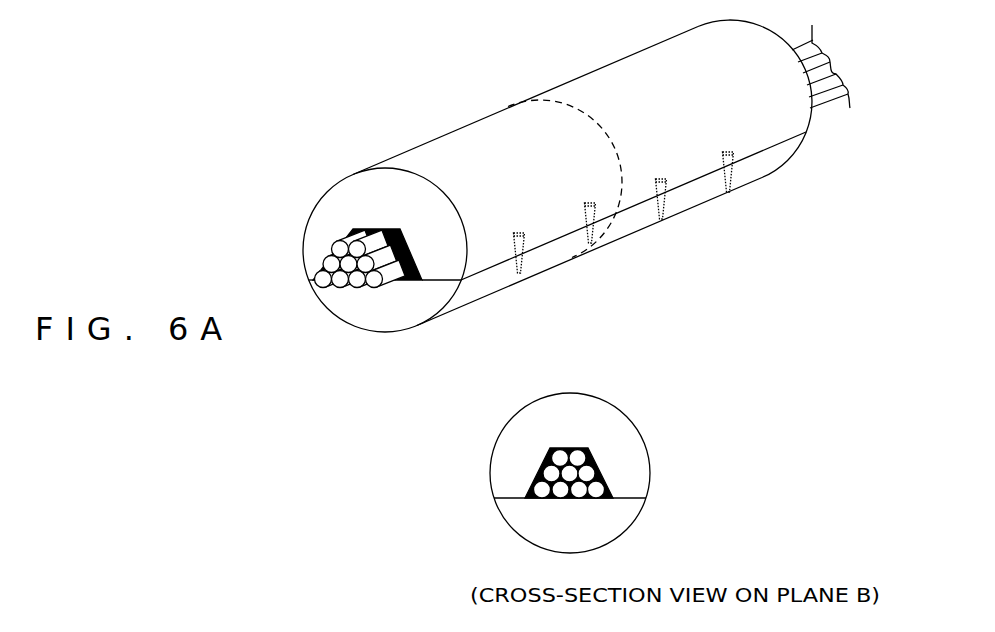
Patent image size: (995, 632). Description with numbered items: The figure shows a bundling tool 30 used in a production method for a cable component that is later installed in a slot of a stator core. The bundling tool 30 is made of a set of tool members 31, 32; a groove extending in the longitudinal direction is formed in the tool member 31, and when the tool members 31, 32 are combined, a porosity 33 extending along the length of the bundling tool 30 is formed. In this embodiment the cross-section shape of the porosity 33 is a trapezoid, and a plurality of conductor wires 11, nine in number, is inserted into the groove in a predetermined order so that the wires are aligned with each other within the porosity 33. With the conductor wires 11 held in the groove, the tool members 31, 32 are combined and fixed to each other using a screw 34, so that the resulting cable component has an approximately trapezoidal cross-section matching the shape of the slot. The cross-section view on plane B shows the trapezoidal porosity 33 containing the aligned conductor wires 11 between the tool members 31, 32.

The conductor wires 11 is at (333, 246).
The bundling tool 30 is at (452, 75).
The tool member 31 is at (443, 157).
The tool member 32 is at (380, 313).
The porosity 33 is at (370, 225).
The screw 34 is at (665, 207).